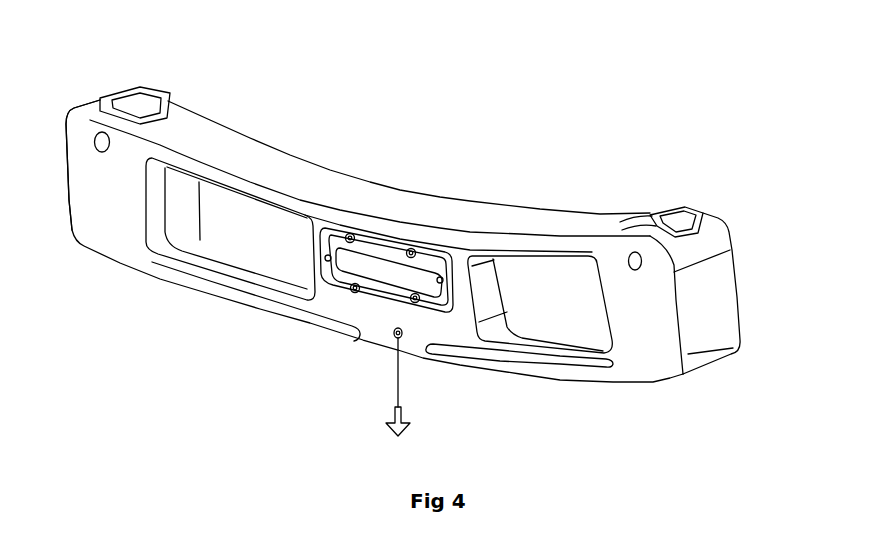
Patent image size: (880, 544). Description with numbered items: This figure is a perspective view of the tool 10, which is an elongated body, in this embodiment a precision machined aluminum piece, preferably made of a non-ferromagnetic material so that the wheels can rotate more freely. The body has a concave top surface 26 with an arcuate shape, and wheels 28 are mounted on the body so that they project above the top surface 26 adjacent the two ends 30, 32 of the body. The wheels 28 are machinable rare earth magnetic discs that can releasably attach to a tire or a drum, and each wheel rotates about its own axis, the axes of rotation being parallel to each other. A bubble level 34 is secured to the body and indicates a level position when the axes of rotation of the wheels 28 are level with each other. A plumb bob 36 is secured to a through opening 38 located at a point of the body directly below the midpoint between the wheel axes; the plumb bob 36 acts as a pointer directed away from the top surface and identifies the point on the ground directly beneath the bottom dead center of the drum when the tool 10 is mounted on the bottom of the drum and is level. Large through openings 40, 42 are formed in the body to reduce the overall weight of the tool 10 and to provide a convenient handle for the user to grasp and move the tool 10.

The tool 10 is at (412, 119).
The concave top surface 26 is at (281, 152).
The wheels 28 is at (141, 100).
The end of the body 30 is at (708, 226).
The end of the body 32 is at (93, 104).
The bubble level 34 is at (384, 261).
The plumb bob 36 is at (405, 405).
The through opening 38 is at (392, 335).
The large through opening 40 is at (242, 265).
The large through opening 42 is at (543, 343).